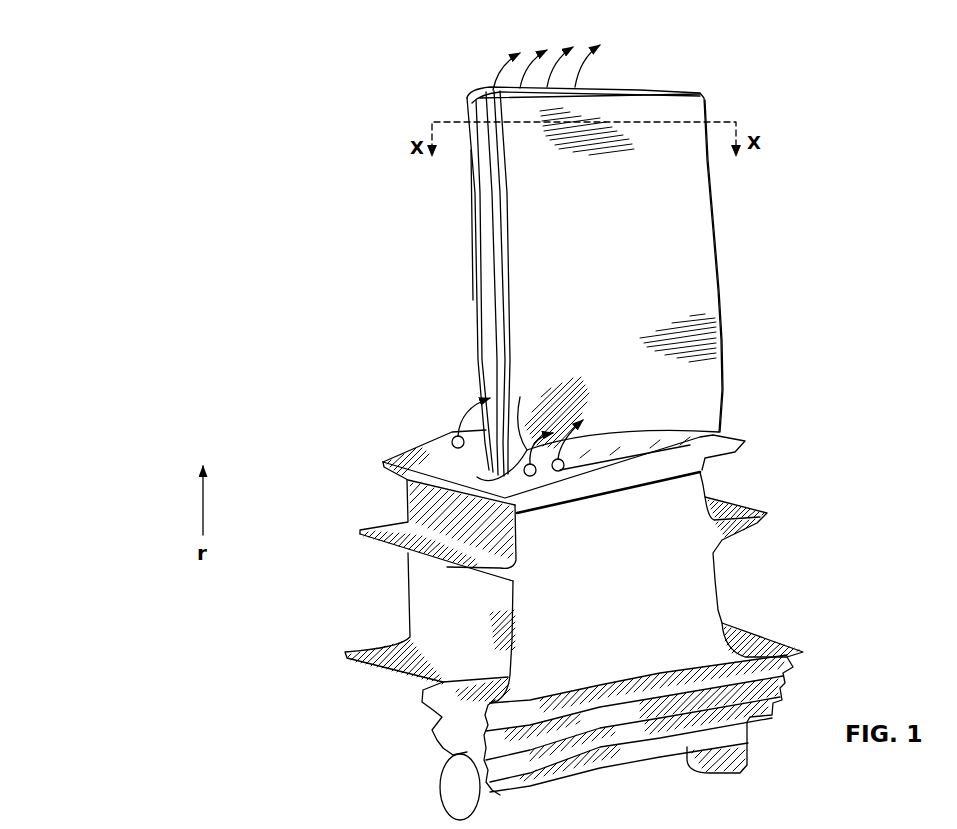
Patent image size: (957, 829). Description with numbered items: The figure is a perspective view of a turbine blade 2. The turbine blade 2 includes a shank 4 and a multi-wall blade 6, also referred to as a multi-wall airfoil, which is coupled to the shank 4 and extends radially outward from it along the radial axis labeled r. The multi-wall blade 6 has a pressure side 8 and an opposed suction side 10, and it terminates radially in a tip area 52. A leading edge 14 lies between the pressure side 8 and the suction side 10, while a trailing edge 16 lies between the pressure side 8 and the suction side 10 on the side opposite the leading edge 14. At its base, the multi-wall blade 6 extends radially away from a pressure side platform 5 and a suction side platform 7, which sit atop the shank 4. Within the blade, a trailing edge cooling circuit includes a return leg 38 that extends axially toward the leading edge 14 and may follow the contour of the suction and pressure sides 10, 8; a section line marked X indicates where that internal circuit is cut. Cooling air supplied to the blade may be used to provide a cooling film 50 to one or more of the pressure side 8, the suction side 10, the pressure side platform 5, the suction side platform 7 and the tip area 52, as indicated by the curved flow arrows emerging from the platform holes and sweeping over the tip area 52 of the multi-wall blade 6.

The turbine blade 2 is at (263, 119).
The shank 4 is at (616, 583).
The pressure side platform 5 is at (638, 448).
The multi-wall blade 6 is at (599, 230).
The suction side platform 7 is at (435, 447).
The pressure side 8 is at (700, 302).
The suction side 10 is at (467, 242).
The leading edge 14 is at (488, 308).
The trailing edge 16 is at (720, 360).
The return leg 38 is at (668, 88).
The cooling film 50 is at (577, 68).
The tip area 52 is at (447, 72).